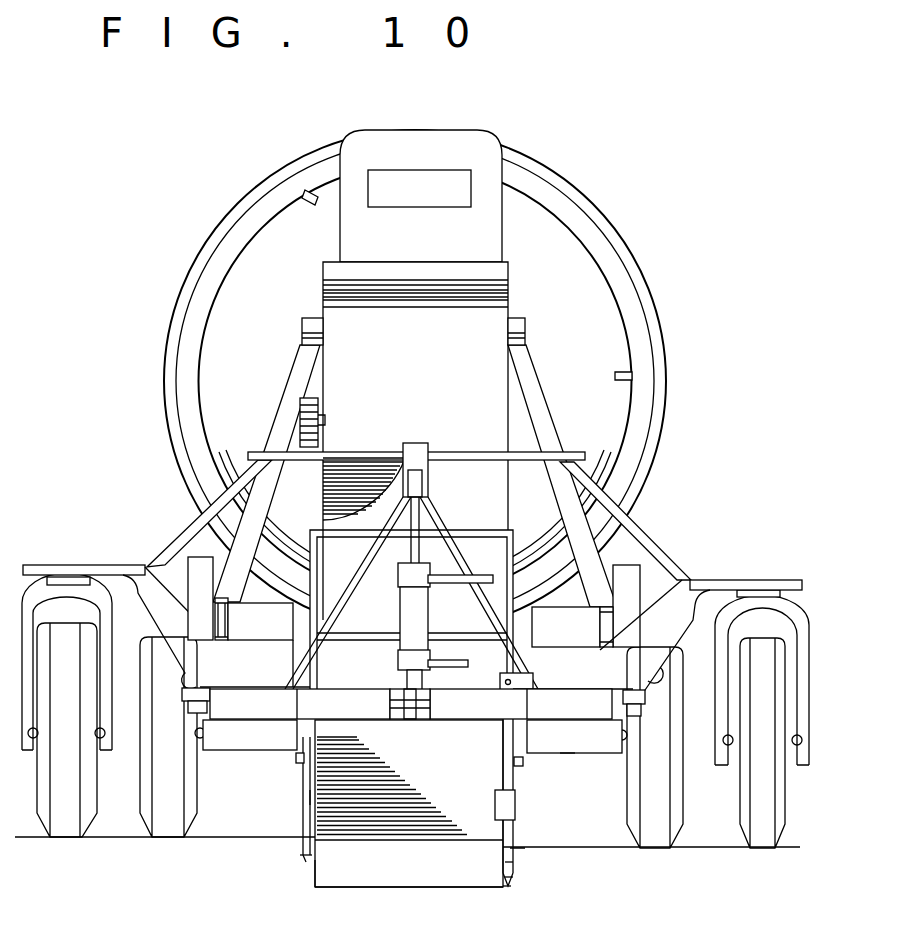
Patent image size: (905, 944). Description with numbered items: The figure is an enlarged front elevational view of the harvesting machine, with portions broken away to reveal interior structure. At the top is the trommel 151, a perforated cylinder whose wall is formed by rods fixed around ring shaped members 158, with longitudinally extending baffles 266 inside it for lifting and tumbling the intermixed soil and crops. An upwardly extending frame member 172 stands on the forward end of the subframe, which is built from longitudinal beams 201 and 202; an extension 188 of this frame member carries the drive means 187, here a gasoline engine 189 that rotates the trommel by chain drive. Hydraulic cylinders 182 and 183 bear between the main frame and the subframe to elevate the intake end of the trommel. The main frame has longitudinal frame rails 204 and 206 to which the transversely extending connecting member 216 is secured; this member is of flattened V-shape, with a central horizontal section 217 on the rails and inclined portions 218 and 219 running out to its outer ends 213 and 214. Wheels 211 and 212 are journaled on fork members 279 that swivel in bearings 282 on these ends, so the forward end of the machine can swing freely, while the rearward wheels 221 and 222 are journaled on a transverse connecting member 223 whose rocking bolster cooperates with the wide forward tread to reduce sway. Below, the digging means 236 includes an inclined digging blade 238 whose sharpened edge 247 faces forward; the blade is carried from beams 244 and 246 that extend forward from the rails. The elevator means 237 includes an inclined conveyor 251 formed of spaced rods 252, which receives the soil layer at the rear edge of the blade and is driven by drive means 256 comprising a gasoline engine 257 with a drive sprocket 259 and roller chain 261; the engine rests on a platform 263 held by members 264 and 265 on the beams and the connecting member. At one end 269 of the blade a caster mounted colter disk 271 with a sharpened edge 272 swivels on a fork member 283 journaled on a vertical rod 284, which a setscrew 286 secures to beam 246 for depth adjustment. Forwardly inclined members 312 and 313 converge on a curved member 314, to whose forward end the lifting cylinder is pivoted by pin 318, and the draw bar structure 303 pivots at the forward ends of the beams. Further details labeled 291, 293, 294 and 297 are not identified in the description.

The trommel 151 is at (585, 187).
The ring shaped member 158 is at (652, 300).
The frame member 172 is at (290, 367).
The hydraulic cylinder 182 is at (183, 678).
The hydraulic cylinder 183 is at (650, 690).
The drive means 187 is at (525, 133).
The extension 188 is at (302, 332).
The gasoline engine 189 is at (404, 166).
The beam 201 is at (230, 621).
The beam 202 is at (598, 610).
The frame rail 204 is at (231, 712).
The frame rail 206 is at (574, 736).
The wheel 211 is at (63, 838).
The wheel 212 is at (745, 849).
The outer end 213 is at (128, 567).
The outer end 214 is at (722, 582).
The connecting member 216 is at (697, 578).
The central horizontal section 217 is at (240, 658).
The inclined portion 218 is at (160, 641).
The inclined portion 219 is at (637, 643).
The wheel 221 is at (160, 838).
The wheel 222 is at (656, 849).
The transverse connecting member 223 is at (560, 755).
The digging means 236 is at (310, 882).
The elevator means 237 is at (295, 799).
The digging blade 238 is at (415, 882).
The beam 244 is at (533, 707).
The beam 246 is at (303, 707).
The sharpened edge 247 is at (341, 889).
The conveyor 251 is at (376, 463).
The rods 252 is at (400, 787).
The drive means 256 is at (522, 320).
The gasoline engine 257 is at (400, 344).
The drive sprocket 259 is at (299, 412).
The roller chain 261 is at (300, 447).
The platform 263 is at (578, 455).
The member 264 is at (302, 556).
The member 265 is at (186, 540).
The baffles 266 is at (309, 208).
The end 269 is at (514, 879).
The colter disk 271 is at (514, 864).
The sharpened edge 272 is at (506, 886).
The fork member 279 is at (100, 616).
The bearing 282 is at (68, 576).
The fork member 283 is at (516, 808).
The vertical rod 284 is at (503, 756).
The setscrew 286 is at (500, 686).
The lower edge 291 is at (303, 860).
The side plate 293 is at (301, 787).
The plate bottom 294 is at (300, 838).
The stop 297 is at (297, 762).
The draw bar structure 303 is at (373, 714).
The forwardly inclined member 312 is at (486, 603).
The forwardly inclined member 313 is at (342, 604).
The curved member 314 is at (416, 448).
The pin 318 is at (428, 493).